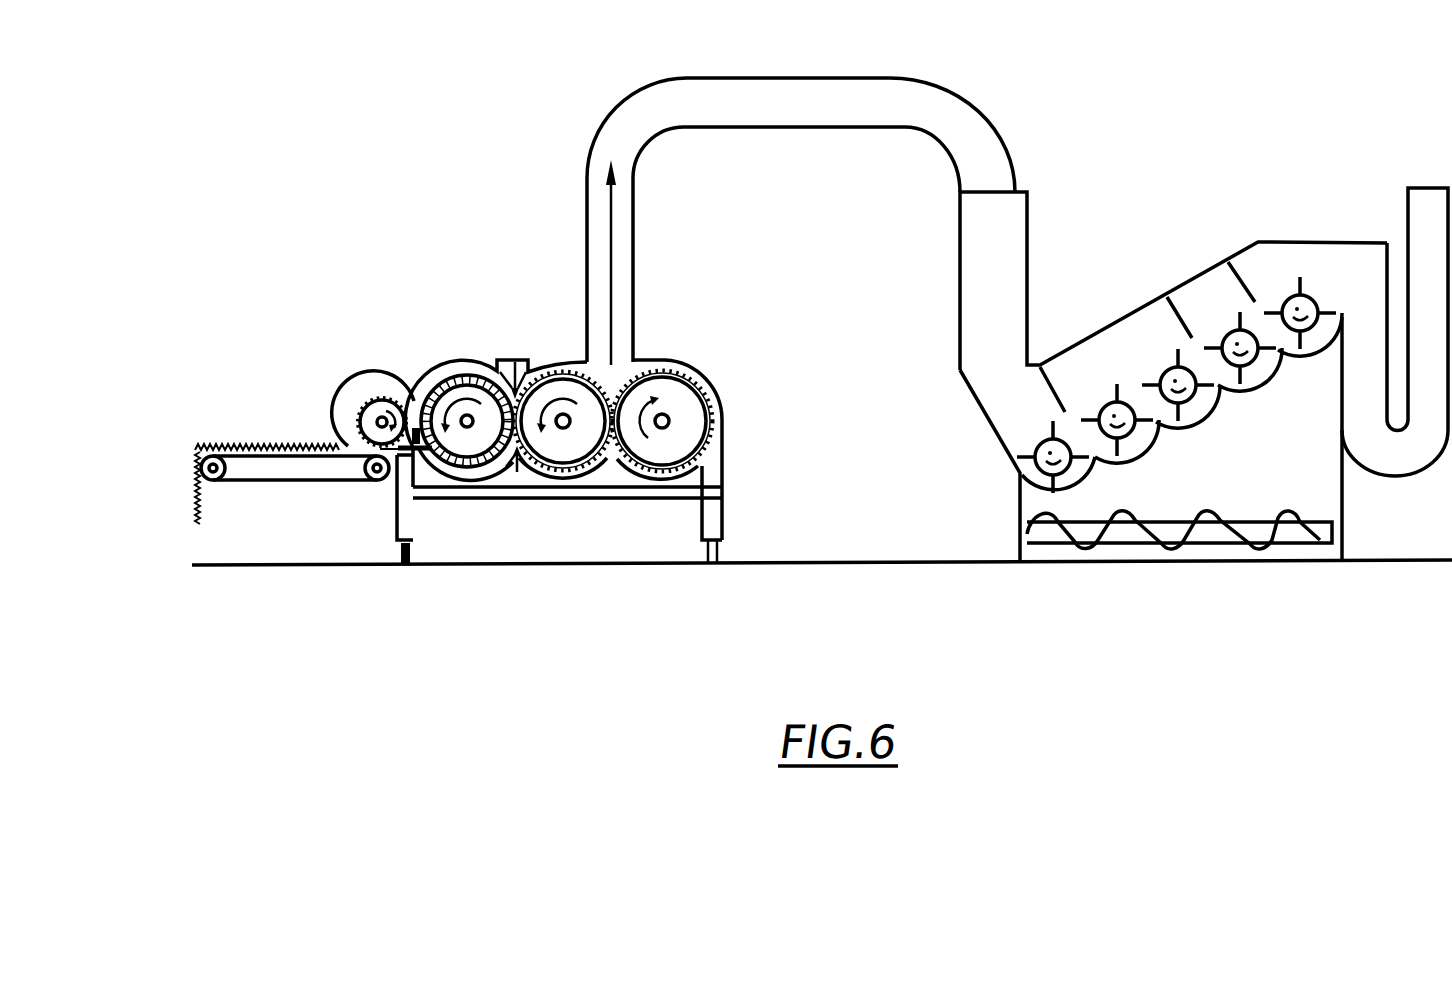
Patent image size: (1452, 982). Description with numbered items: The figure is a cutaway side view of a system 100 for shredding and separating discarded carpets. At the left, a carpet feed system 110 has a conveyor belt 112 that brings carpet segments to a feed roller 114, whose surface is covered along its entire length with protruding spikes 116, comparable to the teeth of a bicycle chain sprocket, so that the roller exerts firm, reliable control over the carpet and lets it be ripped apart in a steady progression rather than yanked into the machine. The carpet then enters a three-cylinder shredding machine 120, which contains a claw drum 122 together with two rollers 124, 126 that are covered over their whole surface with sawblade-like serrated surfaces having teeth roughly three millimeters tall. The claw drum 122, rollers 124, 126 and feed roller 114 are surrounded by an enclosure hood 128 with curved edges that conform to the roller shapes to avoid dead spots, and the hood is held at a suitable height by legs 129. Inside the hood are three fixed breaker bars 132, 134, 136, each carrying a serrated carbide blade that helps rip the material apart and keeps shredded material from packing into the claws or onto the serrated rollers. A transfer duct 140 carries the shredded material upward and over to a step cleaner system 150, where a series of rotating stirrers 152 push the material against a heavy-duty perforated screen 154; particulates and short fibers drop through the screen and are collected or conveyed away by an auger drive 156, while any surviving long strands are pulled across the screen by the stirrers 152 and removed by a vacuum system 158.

The system for shredding and separating discarded carpets 100 is at (821, 389).
The carpet feed system 110 is at (190, 582).
The conveyor belt 112 is at (288, 462).
The feed roller 114 is at (379, 410).
The spikes 116 is at (352, 408).
The three-cylinder shredding machine 120 is at (411, 579).
The claw drum 122 is at (447, 468).
The roller 124 is at (553, 473).
The roller 126 is at (693, 464).
The enclosure hood 128 is at (428, 378).
The legs 129 is at (720, 553).
The breaker bar 132 is at (397, 457).
The breaker bar 134 is at (517, 468).
The breaker bar 136 is at (510, 362).
The transfer duct 140 is at (637, 277).
The step cleaner system 150 is at (1003, 575).
The rotating stirrers 152 is at (1157, 368).
The perforated screen 154 is at (1153, 445).
The auger drive 156 is at (1208, 520).
The vacuum system 158 is at (1367, 470).